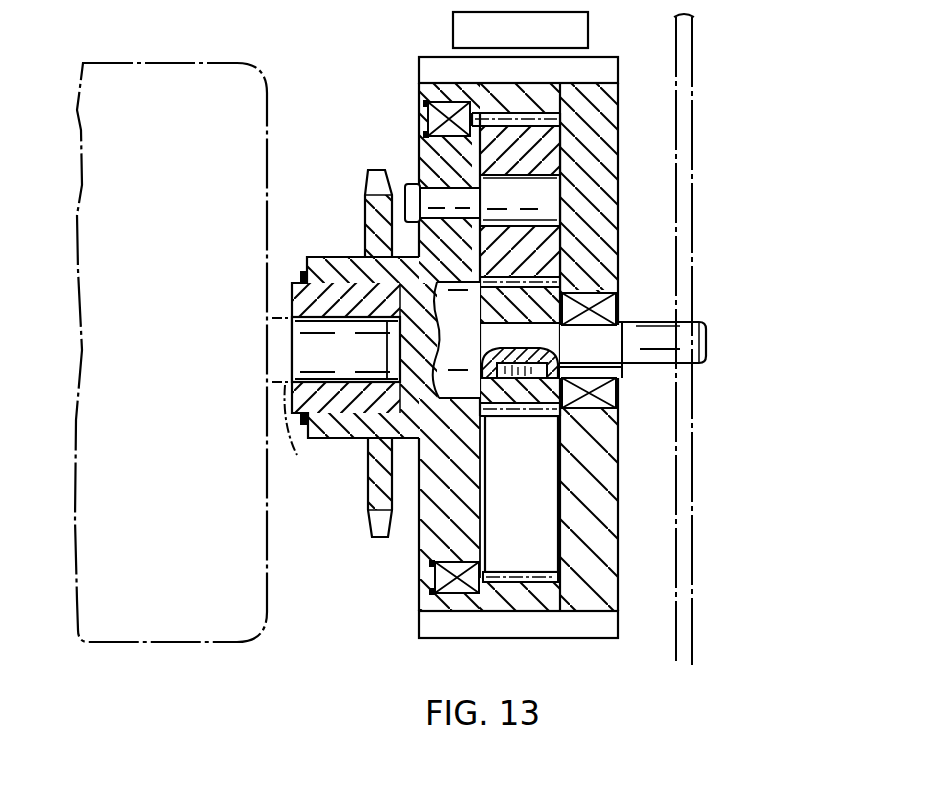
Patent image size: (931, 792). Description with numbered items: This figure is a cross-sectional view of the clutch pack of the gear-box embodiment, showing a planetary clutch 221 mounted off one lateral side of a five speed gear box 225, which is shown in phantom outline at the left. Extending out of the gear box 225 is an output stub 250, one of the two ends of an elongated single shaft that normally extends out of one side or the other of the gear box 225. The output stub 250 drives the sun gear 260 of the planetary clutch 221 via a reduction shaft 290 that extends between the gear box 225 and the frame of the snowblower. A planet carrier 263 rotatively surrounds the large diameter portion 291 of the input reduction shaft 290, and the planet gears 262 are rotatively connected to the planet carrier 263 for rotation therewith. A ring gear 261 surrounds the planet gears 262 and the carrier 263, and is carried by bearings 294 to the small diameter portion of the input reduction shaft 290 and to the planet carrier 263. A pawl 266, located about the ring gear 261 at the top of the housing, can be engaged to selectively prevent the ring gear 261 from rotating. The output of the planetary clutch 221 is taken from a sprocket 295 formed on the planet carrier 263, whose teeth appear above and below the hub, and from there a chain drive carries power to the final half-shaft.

The planetary clutch 221 is at (400, 595).
The five speed gear box 225 is at (197, 63).
The output stub 250 is at (304, 400).
The sun gear 260 is at (540, 302).
The ring gear 261 is at (603, 108).
The planet gear 262 is at (540, 156).
The planet carrier 263 is at (427, 163).
The pawl 266 is at (453, 28).
The reduction shaft 290 is at (707, 361).
The large diameter portion 291 is at (340, 293).
The bearing 294 is at (430, 122).
The sprocket 295 is at (370, 500).